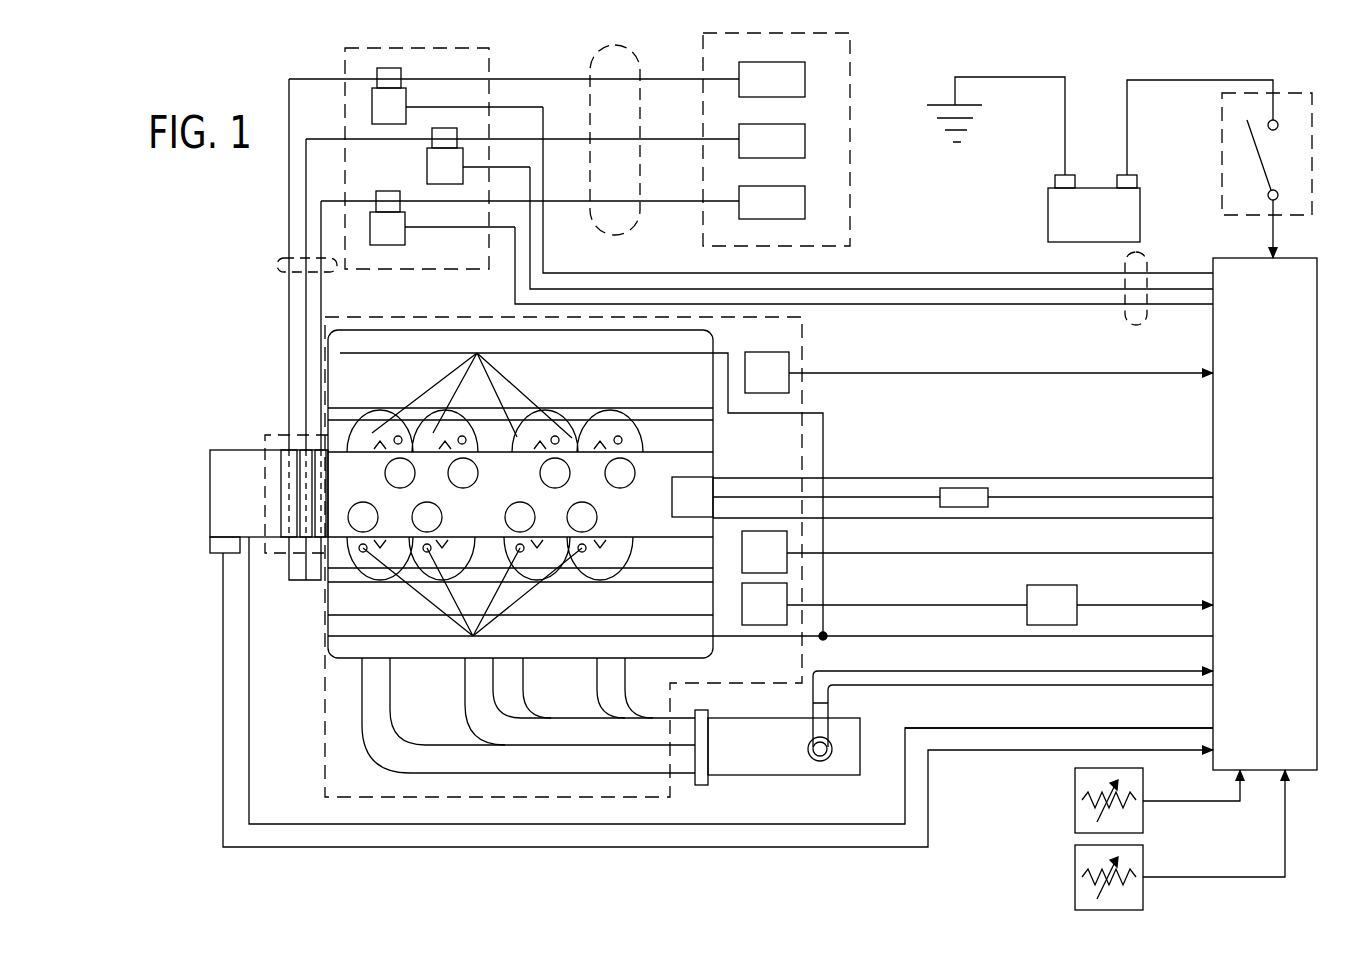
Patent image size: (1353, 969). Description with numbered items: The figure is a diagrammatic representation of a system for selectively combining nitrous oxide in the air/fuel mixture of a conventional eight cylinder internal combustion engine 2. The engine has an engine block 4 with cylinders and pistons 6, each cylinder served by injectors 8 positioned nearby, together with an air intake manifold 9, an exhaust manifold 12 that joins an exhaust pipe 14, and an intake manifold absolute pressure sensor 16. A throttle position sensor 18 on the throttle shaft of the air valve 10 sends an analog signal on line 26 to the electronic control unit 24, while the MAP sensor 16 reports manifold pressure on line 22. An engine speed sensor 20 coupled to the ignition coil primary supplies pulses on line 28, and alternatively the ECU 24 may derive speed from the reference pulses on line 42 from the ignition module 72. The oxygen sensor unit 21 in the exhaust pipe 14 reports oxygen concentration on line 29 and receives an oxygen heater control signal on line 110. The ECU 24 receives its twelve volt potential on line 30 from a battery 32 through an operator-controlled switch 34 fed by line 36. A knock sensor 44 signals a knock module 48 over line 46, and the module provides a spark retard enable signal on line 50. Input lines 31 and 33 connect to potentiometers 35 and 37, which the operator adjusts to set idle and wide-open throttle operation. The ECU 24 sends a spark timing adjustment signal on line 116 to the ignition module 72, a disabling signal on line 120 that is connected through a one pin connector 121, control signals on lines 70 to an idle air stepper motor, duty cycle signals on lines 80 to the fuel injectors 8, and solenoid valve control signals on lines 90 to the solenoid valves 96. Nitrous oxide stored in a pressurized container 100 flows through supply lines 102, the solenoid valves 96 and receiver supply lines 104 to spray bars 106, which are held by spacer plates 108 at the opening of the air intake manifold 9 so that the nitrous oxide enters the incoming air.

The internal combustion engine 2 is at (805, 343).
The engine block 4 is at (340, 353).
The cylinders and pistons 6 is at (491, 495).
The injectors 8 is at (621, 434).
The air intake manifold 9 is at (350, 463).
The air valve 10 is at (208, 501).
The exhaust manifold 12 is at (377, 690).
The exhaust pipe 14 is at (795, 777).
The intake manifold absolute pressure (MAP) sensor 16 is at (757, 385).
The throttle position sensor (TPS) 18 is at (210, 551).
The engine speed sensor (ESS) 20 is at (754, 565).
The oxygen sensor unit 21 is at (808, 733).
The line 22 is at (990, 372).
The electronic control unit (ECU) 24 is at (1255, 543).
The line 26 is at (222, 644).
The line 28 is at (898, 557).
The line 29 is at (1012, 671).
The line 30 is at (1278, 237).
The input line 31 is at (1208, 804).
The battery 32 is at (1084, 229).
The input line 33 is at (1287, 859).
The switch 34 is at (1312, 93).
The potentiometer 35 is at (1073, 800).
The line 36 is at (1130, 83).
The potentiometer 37 is at (1073, 874).
The line 42 is at (908, 521).
The knock sensor 44 is at (754, 617).
The line 46 is at (955, 603).
The knock module 48 is at (1042, 618).
The line 50 is at (1175, 603).
The lines 70 is at (1170, 728).
The ignition module 72 is at (682, 510).
The lines 80 is at (943, 640).
The lines 90 is at (1125, 322).
The solenoid valves 96 is at (424, 271).
The pressurized container 100 is at (850, 228).
The supply lines 102 is at (635, 222).
The receiver supply lines 104 is at (280, 268).
The spray bars 106 is at (305, 583).
The spacer plates 108 is at (268, 436).
The line 110 is at (985, 689).
The line 116 is at (1145, 478).
The line 120 is at (1072, 500).
The one pin connector 121 is at (963, 487).